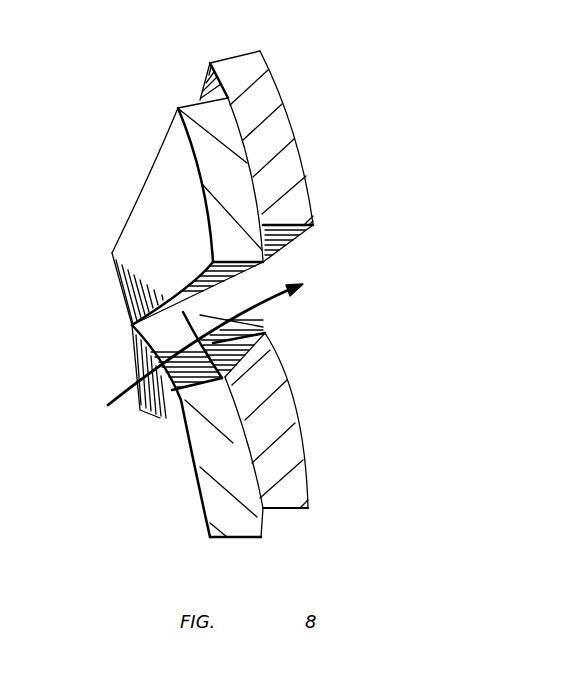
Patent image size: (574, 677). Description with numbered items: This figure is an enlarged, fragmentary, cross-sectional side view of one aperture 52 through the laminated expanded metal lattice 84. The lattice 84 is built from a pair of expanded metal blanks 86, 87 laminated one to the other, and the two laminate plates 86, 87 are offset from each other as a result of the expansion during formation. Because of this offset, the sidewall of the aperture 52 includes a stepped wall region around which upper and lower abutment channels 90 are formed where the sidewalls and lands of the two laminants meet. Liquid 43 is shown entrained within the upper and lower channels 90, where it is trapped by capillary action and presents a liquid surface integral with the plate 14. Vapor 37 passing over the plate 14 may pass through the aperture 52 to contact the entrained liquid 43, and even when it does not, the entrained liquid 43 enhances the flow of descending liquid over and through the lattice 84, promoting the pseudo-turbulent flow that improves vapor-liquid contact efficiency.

The plate 14 is at (182, 177).
The vapor 37 is at (272, 299).
The liquid 43 is at (273, 262).
The aperture 52 is at (265, 289).
The lattice 84 is at (322, 136).
The expanded metal blank 86 is at (157, 240).
The expanded metal blank 87 is at (263, 95).
The abutment channel 90 is at (270, 268).